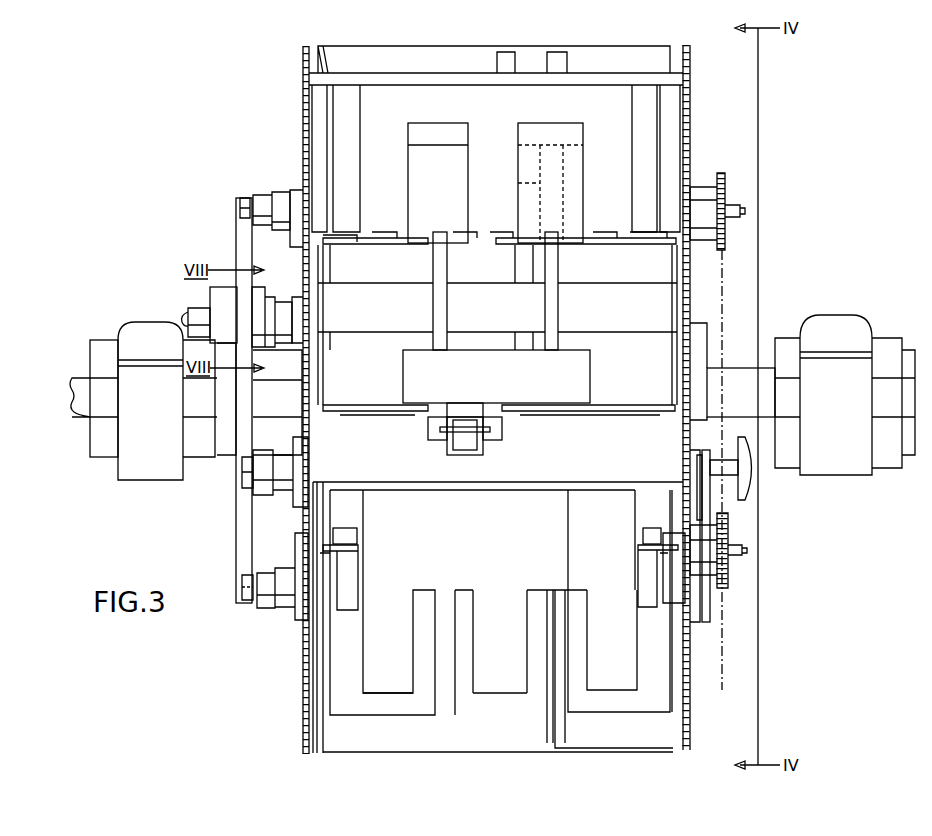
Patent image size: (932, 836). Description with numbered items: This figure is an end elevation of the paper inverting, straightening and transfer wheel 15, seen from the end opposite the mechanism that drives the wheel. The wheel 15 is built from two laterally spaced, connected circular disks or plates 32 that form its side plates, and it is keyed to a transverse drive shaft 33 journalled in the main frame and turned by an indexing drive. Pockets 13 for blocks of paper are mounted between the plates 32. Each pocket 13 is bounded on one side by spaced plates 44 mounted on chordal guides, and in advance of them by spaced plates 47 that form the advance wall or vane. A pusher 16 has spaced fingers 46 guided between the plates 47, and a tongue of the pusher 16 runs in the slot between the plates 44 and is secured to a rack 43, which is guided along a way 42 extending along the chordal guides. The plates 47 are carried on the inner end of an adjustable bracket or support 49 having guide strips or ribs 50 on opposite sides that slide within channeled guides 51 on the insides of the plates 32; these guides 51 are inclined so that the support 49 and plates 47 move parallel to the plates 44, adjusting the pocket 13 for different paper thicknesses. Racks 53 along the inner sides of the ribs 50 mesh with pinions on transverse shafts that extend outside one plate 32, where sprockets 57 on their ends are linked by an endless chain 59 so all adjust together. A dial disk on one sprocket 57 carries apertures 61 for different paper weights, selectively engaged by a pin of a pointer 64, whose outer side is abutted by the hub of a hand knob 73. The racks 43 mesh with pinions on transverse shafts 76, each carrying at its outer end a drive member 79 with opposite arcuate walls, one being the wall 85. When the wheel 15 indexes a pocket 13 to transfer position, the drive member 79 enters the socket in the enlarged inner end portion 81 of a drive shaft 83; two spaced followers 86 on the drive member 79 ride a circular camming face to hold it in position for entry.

The pocket 13 is at (440, 62).
The paper inverting, straightening and transfer wheel 15 is at (302, 84).
The pusher 16 is at (416, 374).
The circular disk or plate 32 is at (690, 100).
The transverse drive shaft 33 is at (736, 384).
The way 42 is at (428, 430).
The rack 43 is at (481, 453).
The plate 44 is at (380, 58).
The finger 46 is at (433, 302).
The plate 47 is at (403, 248).
The adjustable bracket or support 49 is at (617, 154).
The guide strip or rib 50 is at (342, 552).
The channeled guide 51 is at (323, 555).
The rack 53 is at (355, 528).
The sprocket 57 is at (721, 174).
The endless chain 59 is at (724, 268).
The aperture 61 is at (713, 625).
The pointer 64 is at (708, 502).
The hand knob 73 is at (748, 488).
The transverse shaft 76 is at (280, 307).
The drive member 79 is at (280, 343).
The enlarged inner end portion 81 is at (226, 287).
The drive shaft 83 is at (205, 308).
The wall 85 is at (257, 197).
The follower 86 is at (242, 485).